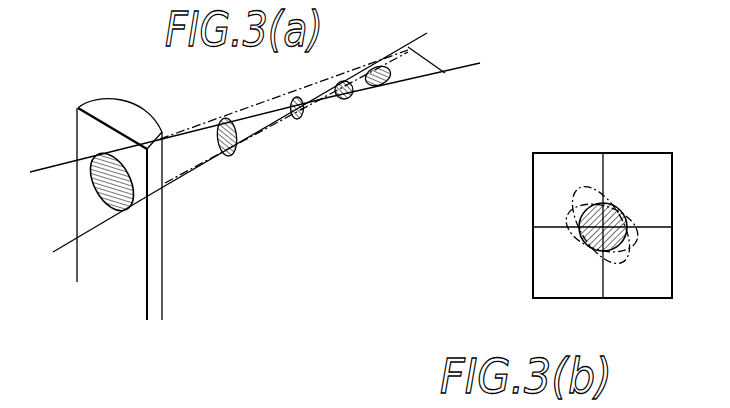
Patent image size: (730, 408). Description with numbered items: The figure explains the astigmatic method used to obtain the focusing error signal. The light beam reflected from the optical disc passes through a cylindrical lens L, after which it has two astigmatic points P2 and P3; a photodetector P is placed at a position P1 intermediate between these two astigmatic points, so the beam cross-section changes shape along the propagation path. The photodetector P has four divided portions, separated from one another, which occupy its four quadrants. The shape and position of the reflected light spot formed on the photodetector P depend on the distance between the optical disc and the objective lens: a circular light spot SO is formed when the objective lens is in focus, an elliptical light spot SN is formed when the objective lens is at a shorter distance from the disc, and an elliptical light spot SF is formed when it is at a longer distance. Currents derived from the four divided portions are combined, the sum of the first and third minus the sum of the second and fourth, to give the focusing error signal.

In FIG. 3A, the cylindrical lens L is at (131, 112).
In FIG. 3A, the position intermediate between the astigmatic points P1 is at (348, 101).
In FIG. 3A, the first astigmatic point P2 is at (266, 106).
In FIG. 3A, the second astigmatic point P3 is at (445, 75).
In FIG. 3B, the photodetector P is at (648, 162).
In FIG. 3B, the elliptical light spot (near) SN is at (571, 190).
In FIG. 3B, the elliptical light spot (far) SF is at (635, 207).
In FIG. 3B, the circular light spot SO is at (585, 251).